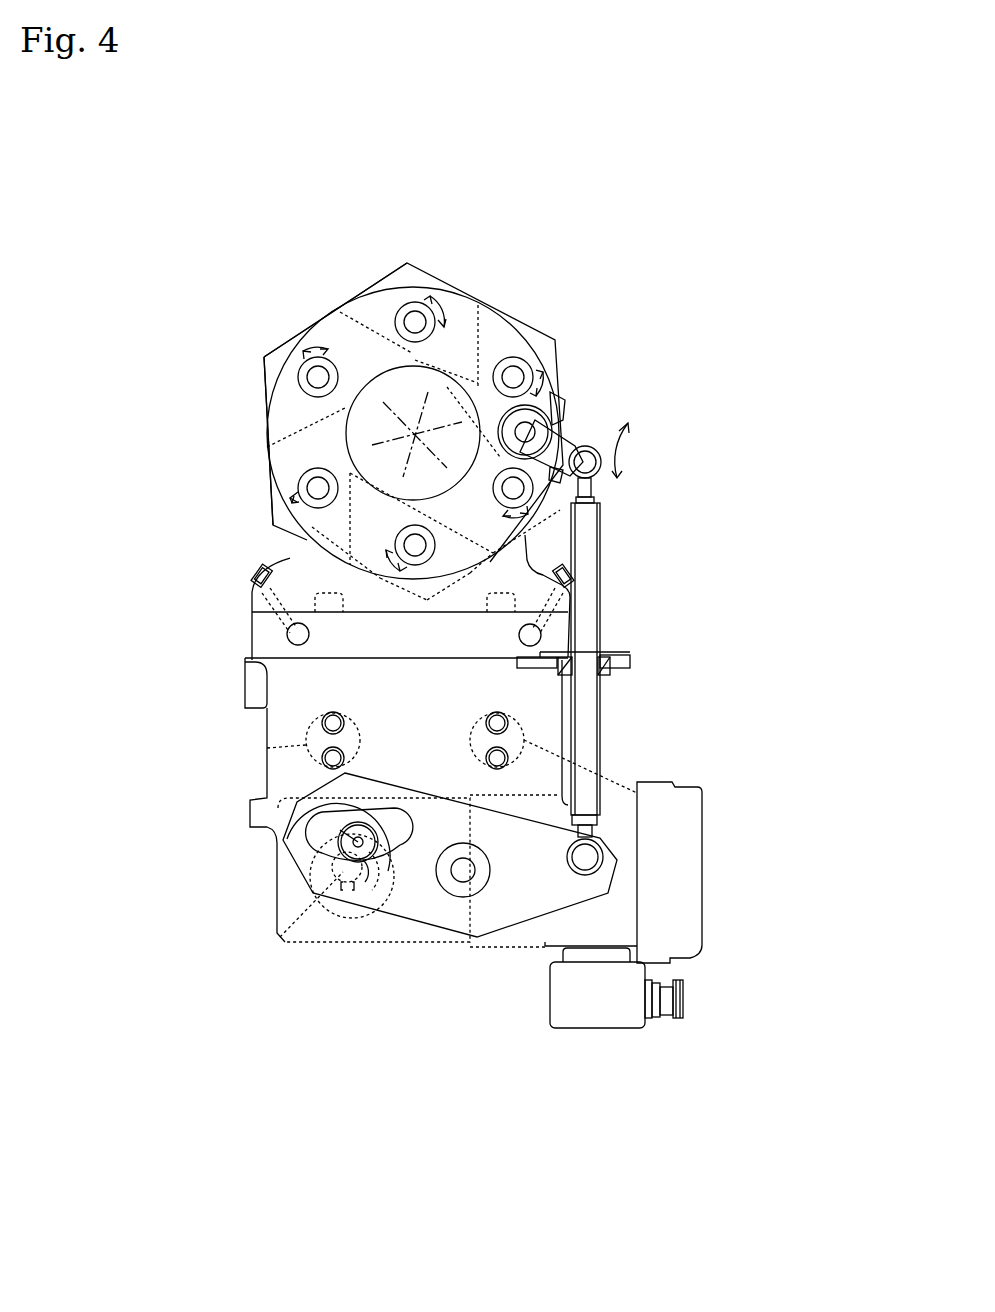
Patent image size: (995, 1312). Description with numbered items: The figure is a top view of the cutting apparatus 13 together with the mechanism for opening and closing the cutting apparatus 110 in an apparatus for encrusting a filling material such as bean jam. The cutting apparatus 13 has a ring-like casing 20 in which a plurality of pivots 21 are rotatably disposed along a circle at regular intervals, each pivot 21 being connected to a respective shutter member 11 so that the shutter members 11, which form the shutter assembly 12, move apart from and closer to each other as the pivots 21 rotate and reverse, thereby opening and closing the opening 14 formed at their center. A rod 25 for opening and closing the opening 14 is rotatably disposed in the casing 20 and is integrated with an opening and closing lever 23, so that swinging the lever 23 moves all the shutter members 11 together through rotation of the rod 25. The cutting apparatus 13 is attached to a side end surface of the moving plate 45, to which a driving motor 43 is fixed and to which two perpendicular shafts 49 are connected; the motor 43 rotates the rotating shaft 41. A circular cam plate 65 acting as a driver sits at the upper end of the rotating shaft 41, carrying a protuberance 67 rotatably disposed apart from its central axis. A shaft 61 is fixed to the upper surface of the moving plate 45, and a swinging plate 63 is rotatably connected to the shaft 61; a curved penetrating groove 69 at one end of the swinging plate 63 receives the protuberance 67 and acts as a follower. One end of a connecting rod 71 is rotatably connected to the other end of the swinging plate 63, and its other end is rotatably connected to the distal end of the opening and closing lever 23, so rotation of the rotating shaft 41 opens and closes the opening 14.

The cutting apparatus 13 is at (300, 312).
The ring-like casing 20 is at (457, 322).
The shutter member 11 is at (400, 278).
The shutter assembly 12 is at (267, 520).
The opening 14 is at (383, 425).
The pivot 21 is at (415, 322).
The rod 25 is at (525, 432).
The opening and closing lever 23 is at (560, 437).
The connecting rod 71 is at (590, 568).
The mechanism for opening and closing the cutting apparatus 110 is at (617, 638).
The moving plate 45 is at (307, 692).
The perpendicular shaft 49 is at (267, 748).
The rotating shaft 41 is at (280, 940).
The swinging plate 63 is at (433, 903).
The protuberance 67 is at (300, 817).
The penetrating groove 69 is at (320, 852).
The cam plate 65 is at (351, 900).
The shaft 61 is at (460, 875).
The driving motor 43 is at (588, 1005).